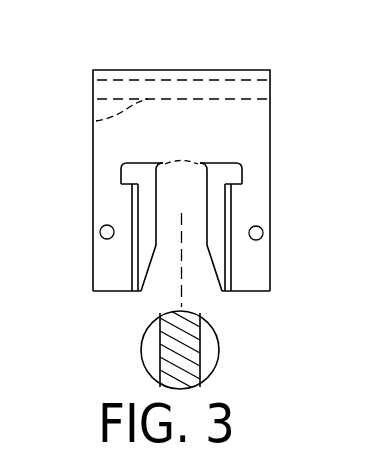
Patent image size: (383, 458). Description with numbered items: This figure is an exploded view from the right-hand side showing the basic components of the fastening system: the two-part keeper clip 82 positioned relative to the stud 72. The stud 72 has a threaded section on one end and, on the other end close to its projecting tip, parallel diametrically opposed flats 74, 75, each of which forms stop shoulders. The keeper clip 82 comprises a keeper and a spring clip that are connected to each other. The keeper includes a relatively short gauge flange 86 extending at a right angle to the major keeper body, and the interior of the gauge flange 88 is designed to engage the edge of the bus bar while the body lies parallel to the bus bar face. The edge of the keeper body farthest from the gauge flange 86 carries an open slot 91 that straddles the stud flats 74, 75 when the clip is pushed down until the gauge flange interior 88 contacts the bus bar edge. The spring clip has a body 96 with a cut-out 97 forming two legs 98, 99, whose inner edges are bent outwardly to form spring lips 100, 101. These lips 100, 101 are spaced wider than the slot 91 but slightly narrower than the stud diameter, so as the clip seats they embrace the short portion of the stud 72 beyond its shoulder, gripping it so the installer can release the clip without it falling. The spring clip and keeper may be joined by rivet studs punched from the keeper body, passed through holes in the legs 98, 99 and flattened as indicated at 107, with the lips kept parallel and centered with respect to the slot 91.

The stud 72 is at (220, 329).
The flat 74 is at (160, 350).
The flat 75 is at (200, 350).
The keeper clip 82 is at (271, 69).
The gauge flange 86 is at (182, 86).
The interior of the gauge flange 88 is at (98, 121).
The open slot 91 is at (156, 228).
The body 96 is at (258, 121).
The cut-out 97 is at (222, 163).
The leg 98 is at (107, 178).
The leg 99 is at (262, 207).
The spring lip 100 is at (132, 260).
The spring lip 101 is at (229, 267).
The flattened rivet stud 107 is at (263, 235).